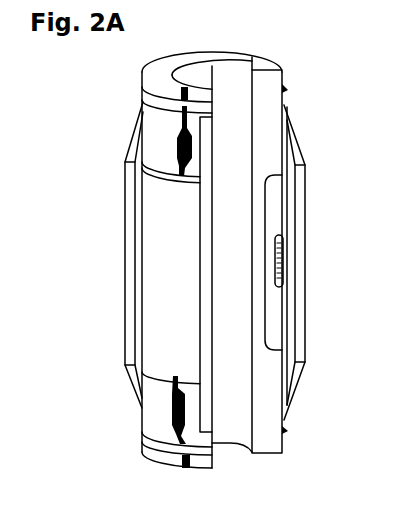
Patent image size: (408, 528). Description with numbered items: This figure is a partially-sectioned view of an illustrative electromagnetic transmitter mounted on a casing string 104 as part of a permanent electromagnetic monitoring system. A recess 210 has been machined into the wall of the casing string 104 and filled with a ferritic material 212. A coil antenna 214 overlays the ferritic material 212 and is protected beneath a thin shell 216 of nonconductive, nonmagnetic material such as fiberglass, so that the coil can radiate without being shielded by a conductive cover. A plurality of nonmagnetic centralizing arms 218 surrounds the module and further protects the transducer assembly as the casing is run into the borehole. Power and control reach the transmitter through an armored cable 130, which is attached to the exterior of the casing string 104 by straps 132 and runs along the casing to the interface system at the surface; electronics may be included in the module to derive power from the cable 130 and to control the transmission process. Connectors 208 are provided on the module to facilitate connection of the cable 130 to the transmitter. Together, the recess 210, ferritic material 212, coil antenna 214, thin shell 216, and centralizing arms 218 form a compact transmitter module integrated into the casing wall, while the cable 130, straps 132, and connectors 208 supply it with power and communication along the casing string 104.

The casing string 104 is at (155, 412).
The armored cable 130 is at (182, 88).
The strap 132 is at (286, 90).
The connector 208 is at (183, 141).
The recess 210 is at (263, 212).
The ferritic material 212 is at (275, 220).
The coil antenna 214 is at (281, 263).
The thin shell 216 is at (130, 162).
The nonmagnetic centralizing arms 218 is at (301, 156).